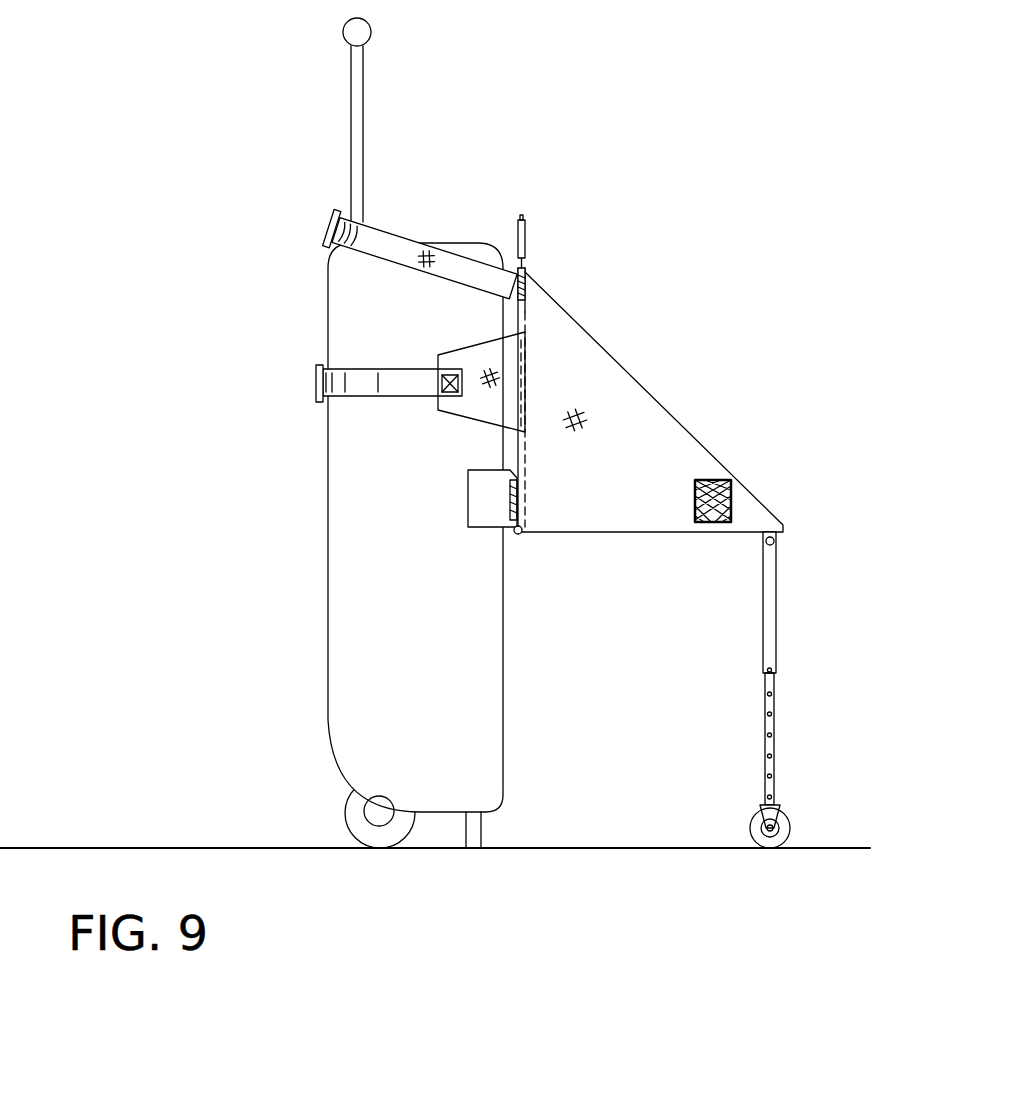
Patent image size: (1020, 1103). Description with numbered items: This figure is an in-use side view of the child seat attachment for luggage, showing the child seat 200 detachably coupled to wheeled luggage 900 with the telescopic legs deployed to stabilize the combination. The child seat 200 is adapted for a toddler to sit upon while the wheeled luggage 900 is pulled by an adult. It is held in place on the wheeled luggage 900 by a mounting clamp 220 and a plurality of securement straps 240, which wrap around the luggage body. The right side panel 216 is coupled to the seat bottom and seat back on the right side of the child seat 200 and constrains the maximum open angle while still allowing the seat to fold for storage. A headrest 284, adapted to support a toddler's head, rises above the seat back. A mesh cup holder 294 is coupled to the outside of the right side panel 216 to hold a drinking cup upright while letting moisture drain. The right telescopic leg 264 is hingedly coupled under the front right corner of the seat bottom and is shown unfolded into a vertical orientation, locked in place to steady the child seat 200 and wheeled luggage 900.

The child seat 200 is at (786, 193).
The right side panel 216 is at (622, 400).
The mounting clamp 220 is at (486, 508).
The securement straps 240 is at (360, 245).
The right telescopic leg 264 is at (767, 598).
The headrest 284 is at (527, 232).
The mesh cup holder 294 is at (710, 490).
The wheeled luggage 900 is at (350, 563).